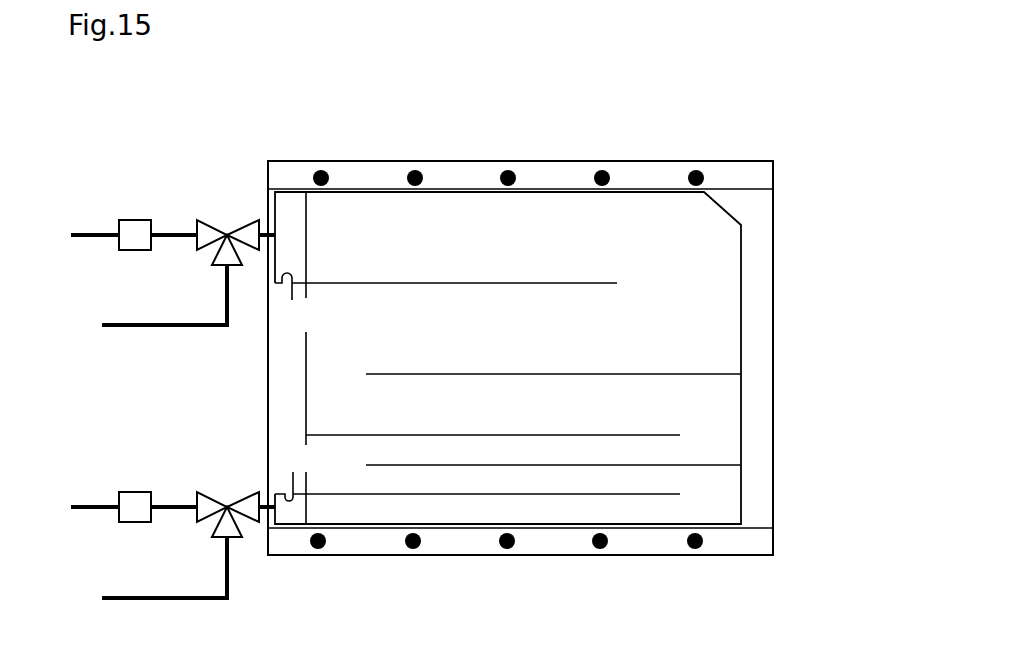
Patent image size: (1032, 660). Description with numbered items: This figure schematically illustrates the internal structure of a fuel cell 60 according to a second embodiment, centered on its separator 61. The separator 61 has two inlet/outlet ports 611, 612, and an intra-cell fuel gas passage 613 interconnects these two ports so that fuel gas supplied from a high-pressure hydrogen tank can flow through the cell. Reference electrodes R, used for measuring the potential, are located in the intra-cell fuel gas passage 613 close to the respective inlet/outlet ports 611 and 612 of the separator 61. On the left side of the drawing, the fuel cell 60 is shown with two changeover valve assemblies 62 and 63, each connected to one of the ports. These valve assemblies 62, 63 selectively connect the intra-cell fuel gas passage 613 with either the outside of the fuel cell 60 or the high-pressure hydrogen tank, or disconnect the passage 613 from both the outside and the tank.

The fuel cell 60 is at (548, 348).
The separator 61 is at (749, 317).
The changeover valve assembly 62 is at (173, 219).
The changeover valve assembly 63 is at (173, 492).
The inlet/outlet port 611 is at (288, 302).
The inlet/outlet port 612 is at (288, 473).
The intra-cell fuel gas passage 613 is at (540, 339).
The reference electrodes R is at (330, 170).